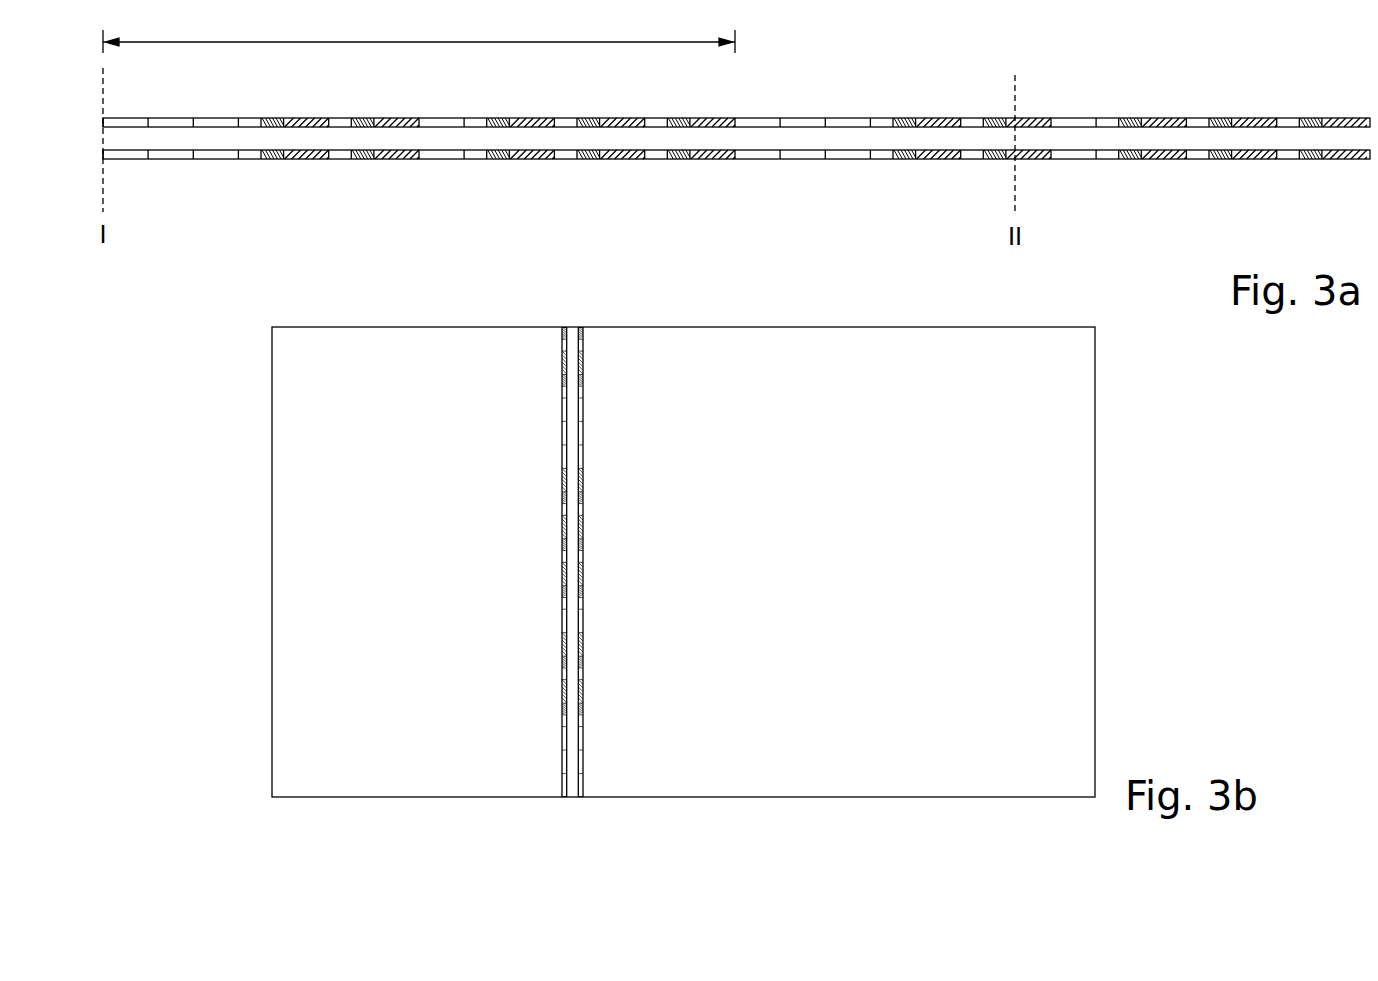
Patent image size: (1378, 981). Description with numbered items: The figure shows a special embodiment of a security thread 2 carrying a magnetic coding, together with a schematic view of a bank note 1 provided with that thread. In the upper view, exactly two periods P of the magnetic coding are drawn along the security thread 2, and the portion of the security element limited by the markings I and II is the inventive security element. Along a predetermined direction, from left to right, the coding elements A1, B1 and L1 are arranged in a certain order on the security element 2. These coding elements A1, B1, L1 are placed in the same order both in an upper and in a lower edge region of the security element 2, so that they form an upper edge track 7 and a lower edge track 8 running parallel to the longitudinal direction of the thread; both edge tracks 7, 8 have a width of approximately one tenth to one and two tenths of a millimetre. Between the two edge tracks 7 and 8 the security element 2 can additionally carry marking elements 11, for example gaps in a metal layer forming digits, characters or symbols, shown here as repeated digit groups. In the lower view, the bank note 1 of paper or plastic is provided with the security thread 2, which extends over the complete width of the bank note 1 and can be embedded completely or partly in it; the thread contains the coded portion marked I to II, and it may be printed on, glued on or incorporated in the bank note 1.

In FIG. 3B, the bank note 1 is at (272, 448).
In FIG. 3A, the security thread 2 is at (718, 166).
In FIG. 3B, the security thread 2 is at (563, 475).
In FIG. 3A, the upper edge track 7 is at (103, 119).
In FIG. 3A, the lower edge track 8 is at (103, 152).
In FIG. 3A, the marking elements 11 is at (180, 148).
In FIG. 3A, the period P is at (419, 32).
In FIG. 3A, the coding element L1 is at (126, 118).
In FIG. 3A, the coding element A1 is at (307, 118).
In FIG. 3A, the coding element B1 is at (261, 118).